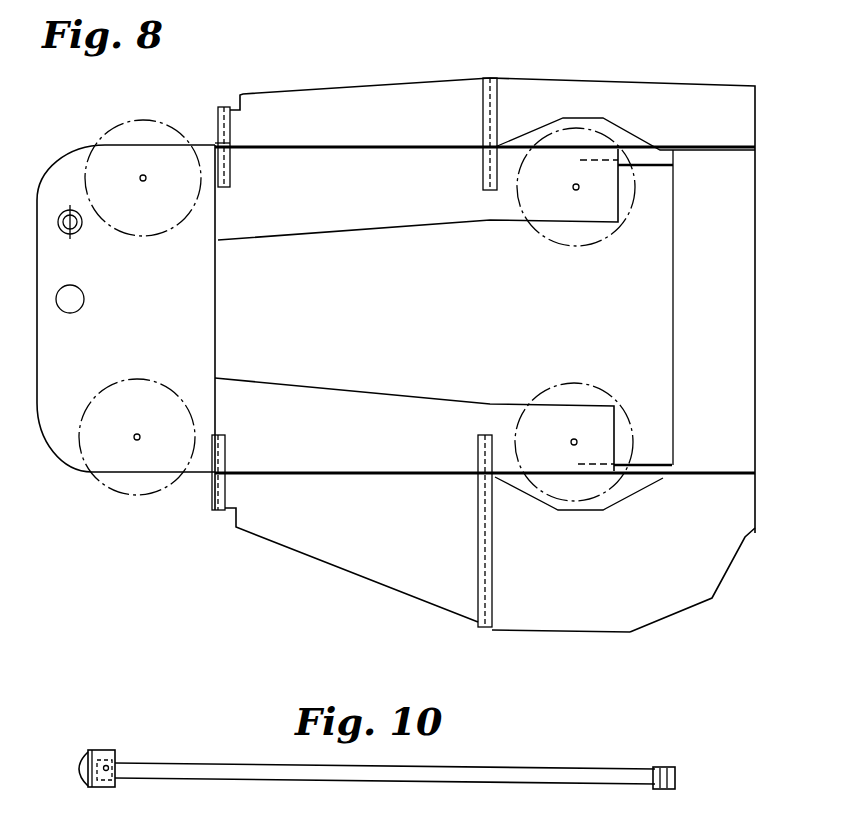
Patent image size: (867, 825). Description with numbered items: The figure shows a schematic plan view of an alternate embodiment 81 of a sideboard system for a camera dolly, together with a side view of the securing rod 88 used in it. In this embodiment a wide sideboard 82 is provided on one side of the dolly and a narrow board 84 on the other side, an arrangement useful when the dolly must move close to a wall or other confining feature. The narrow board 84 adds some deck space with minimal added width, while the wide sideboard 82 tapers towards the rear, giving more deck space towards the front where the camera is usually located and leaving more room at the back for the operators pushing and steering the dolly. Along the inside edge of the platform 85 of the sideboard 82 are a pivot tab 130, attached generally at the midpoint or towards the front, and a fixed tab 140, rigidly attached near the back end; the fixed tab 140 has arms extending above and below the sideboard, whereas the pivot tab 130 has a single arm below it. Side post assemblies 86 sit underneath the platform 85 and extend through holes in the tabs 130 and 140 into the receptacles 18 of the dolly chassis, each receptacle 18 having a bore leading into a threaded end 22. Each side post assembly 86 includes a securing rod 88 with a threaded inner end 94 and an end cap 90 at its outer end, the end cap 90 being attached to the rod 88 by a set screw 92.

In FIG. 8, the receptacle 18 is at (480, 190).
In FIG. 8, the threaded end 22 is at (218, 435).
In FIG. 8, the alternate embodiment 81 is at (765, 246).
In FIG. 8, the wide sideboard 82 is at (430, 540).
In FIG. 8, the narrow board 84 is at (755, 108).
In FIG. 8, the platform 85 is at (568, 590).
In FIG. 8, the side post assembly 86 is at (212, 130).
In FIG. 10, the securing rod 88 is at (573, 768).
In FIG. 10, the end cap 90 is at (77, 762).
In FIG. 10, the set screw 92 is at (106, 753).
In FIG. 10, the threaded inner end 94 is at (676, 770).
In FIG. 8, the pivot tab 130 is at (482, 152).
In FIG. 8, the fixed tab 140 is at (235, 143).